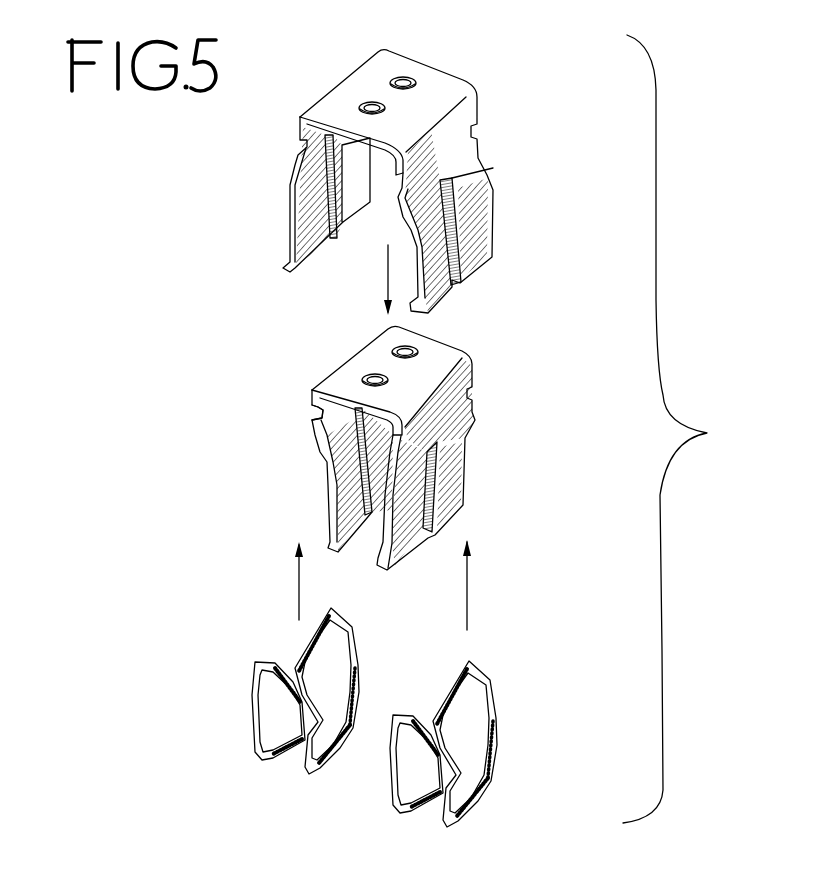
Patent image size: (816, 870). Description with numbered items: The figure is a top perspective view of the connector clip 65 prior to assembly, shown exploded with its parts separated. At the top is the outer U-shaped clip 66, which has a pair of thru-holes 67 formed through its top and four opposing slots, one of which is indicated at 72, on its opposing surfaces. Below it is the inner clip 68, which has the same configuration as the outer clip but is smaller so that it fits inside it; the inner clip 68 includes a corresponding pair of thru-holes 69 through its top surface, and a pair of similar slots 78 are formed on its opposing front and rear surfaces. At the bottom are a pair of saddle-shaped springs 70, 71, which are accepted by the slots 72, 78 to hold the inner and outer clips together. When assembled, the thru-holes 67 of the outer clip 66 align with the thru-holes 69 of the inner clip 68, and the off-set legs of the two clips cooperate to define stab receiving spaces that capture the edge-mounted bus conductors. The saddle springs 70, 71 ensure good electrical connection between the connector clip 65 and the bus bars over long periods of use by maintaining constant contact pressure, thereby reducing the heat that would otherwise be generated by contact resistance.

The connector clip 65 is at (756, 445).
The outer U-shaped clip 66 is at (423, 164).
The thru-holes 67 is at (402, 76).
The inner clip 68 is at (373, 439).
The thru-holes 69 is at (405, 346).
The saddle-shaped spring 70 is at (358, 647).
The saddle-shaped spring 71 is at (498, 742).
The slots 72 is at (385, 226).
The slots 78 is at (314, 414).